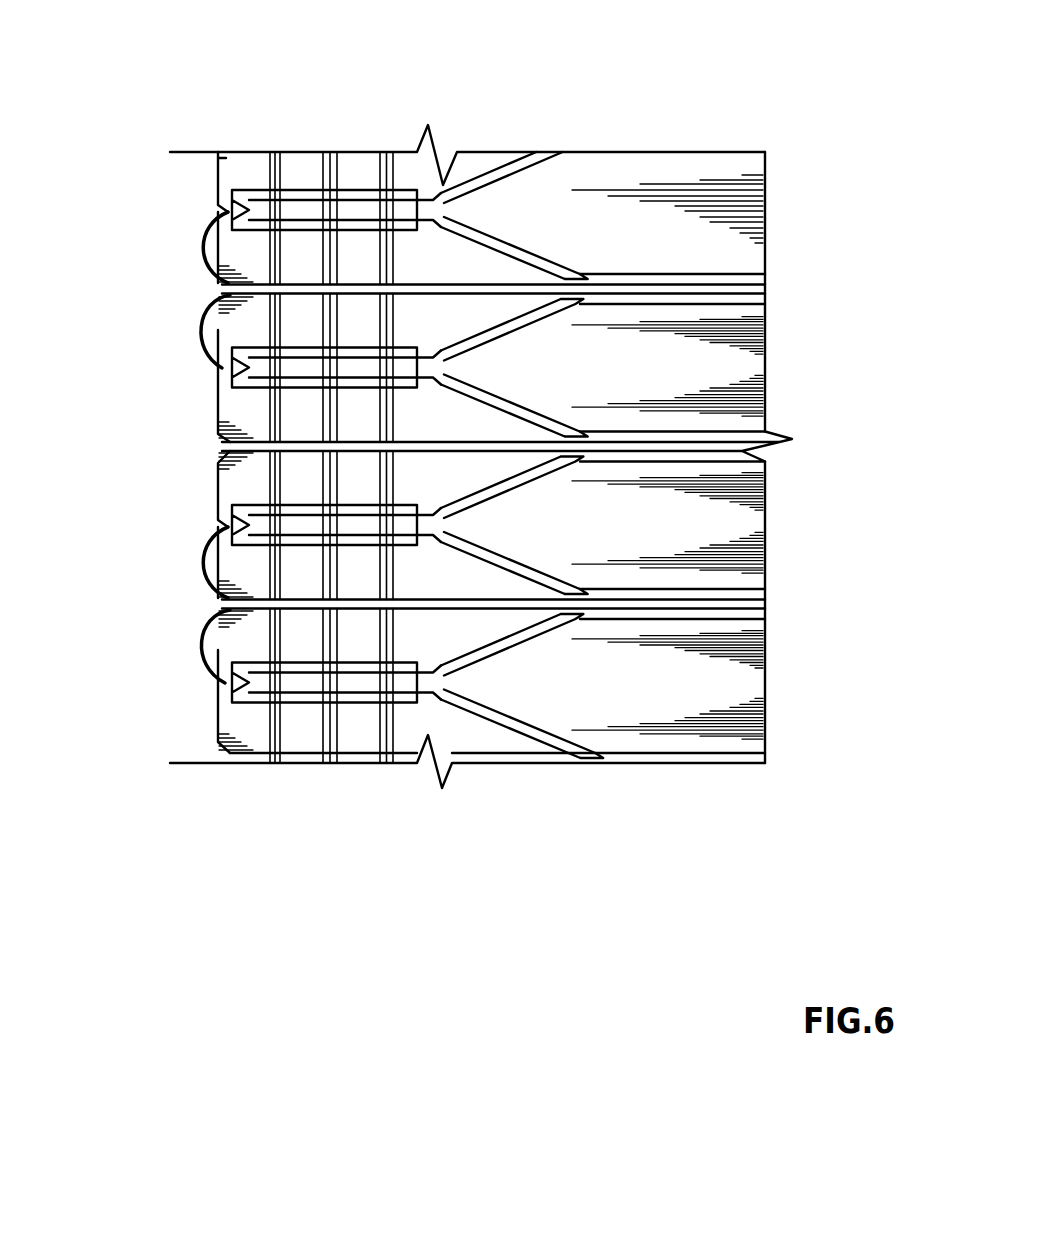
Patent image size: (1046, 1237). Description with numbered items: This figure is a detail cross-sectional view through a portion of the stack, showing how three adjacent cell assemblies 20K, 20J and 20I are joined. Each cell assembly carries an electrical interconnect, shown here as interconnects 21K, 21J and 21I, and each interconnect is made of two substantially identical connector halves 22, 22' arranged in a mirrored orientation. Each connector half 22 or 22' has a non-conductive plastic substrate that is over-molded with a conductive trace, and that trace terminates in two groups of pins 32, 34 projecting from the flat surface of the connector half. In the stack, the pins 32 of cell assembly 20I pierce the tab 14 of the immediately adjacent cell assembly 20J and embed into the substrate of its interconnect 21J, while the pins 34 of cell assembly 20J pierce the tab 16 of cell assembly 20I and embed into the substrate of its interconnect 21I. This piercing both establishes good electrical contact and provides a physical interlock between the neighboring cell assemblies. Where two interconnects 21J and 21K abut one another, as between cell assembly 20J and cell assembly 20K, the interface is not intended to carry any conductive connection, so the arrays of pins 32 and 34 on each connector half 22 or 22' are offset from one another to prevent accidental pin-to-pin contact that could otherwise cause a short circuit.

The tab 14 is at (212, 274).
The tab 16 is at (212, 308).
The cell assembly 20K is at (140, 399).
The cell assembly 20J is at (143, 486).
The cell assembly 20I is at (142, 667).
The interconnect 21K is at (229, 368).
The interconnect 21J is at (225, 523).
The interconnect 21I is at (226, 684).
The connector half 22 is at (149, 447).
The connector half 22' is at (149, 589).
The pins 32 is at (390, 632).
The pins 34 is at (388, 572).